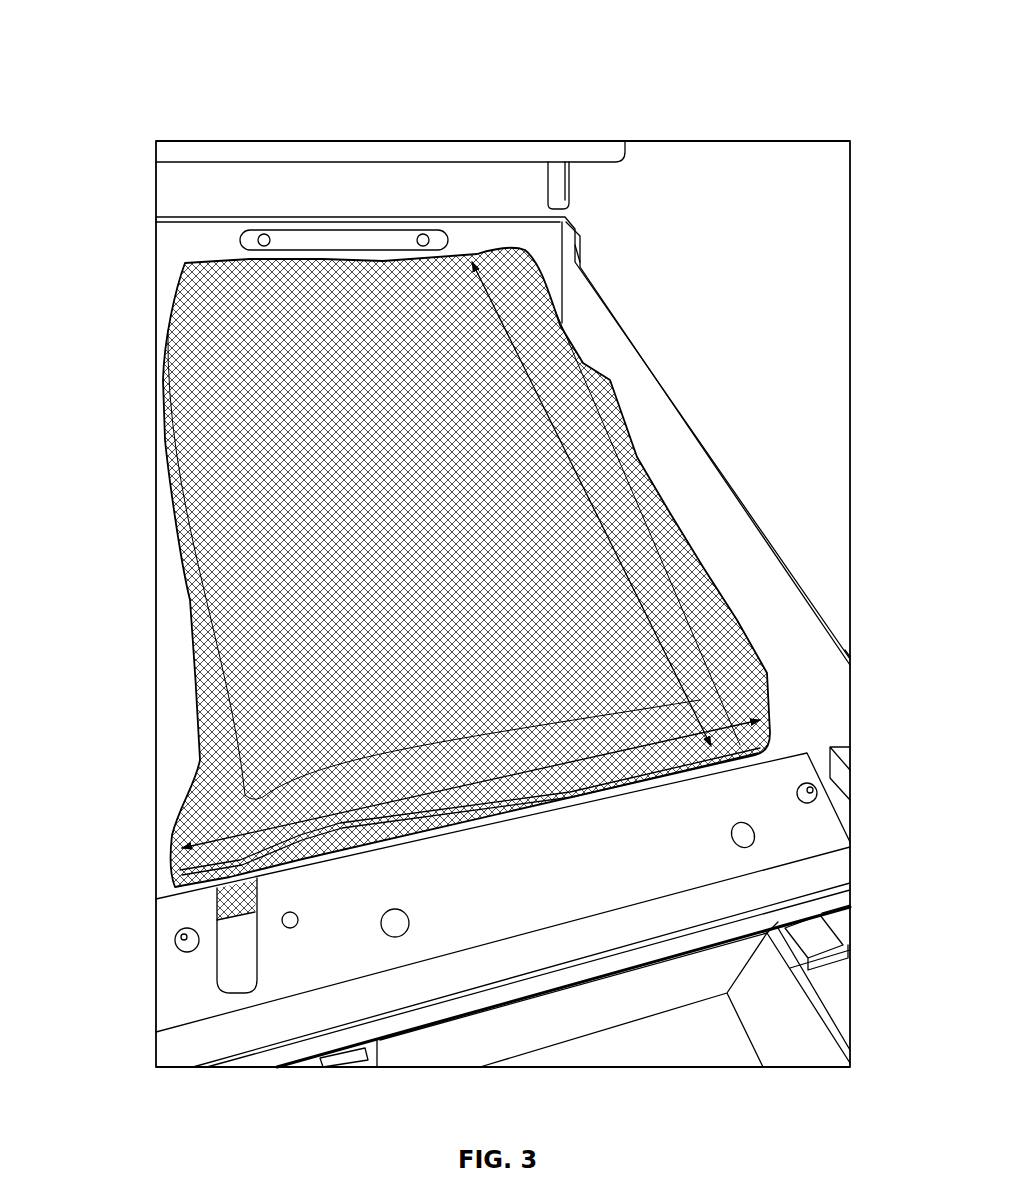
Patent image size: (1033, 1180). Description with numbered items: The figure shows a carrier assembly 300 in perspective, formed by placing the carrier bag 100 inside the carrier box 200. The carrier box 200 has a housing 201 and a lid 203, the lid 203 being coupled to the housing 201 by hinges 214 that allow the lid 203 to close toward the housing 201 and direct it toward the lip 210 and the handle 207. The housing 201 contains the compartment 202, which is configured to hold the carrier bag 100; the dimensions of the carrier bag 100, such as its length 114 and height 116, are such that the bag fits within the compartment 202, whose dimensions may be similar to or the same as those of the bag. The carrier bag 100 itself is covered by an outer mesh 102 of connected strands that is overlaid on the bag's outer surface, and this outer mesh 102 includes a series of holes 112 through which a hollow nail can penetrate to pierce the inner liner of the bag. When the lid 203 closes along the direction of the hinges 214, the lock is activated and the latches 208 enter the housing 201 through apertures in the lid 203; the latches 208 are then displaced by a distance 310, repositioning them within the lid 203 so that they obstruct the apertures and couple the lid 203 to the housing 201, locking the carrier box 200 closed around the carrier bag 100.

The carrier assembly 300 is at (120, 57).
The carrier box 200 is at (137, 993).
The housing 201 is at (850, 637).
The compartment 202 is at (802, 580).
The lid 203 is at (160, 190).
The handle 207 is at (750, 1068).
The latches 208 is at (832, 983).
The lip 210 is at (823, 825).
The hinges 214 is at (152, 220).
The distance 310 is at (817, 950).
The carrier bag 100 is at (100, 630).
The outer mesh 102 is at (193, 468).
The holes 112 is at (220, 778).
The length 114 is at (598, 517).
The height 116 is at (522, 772).